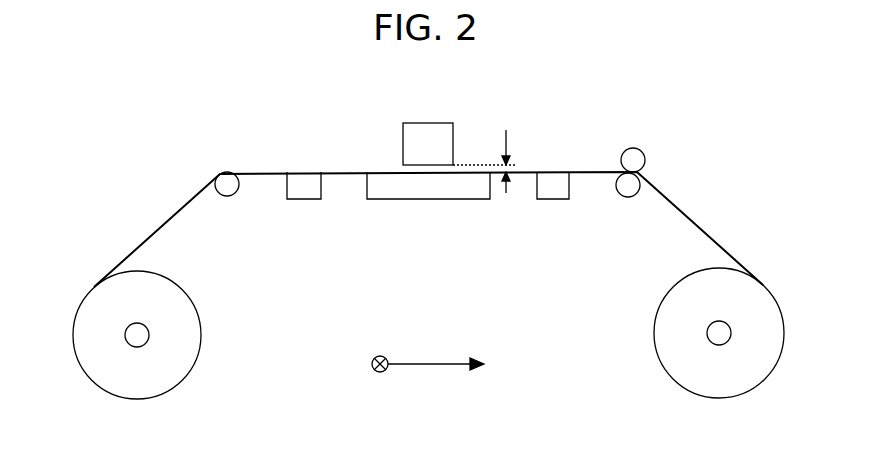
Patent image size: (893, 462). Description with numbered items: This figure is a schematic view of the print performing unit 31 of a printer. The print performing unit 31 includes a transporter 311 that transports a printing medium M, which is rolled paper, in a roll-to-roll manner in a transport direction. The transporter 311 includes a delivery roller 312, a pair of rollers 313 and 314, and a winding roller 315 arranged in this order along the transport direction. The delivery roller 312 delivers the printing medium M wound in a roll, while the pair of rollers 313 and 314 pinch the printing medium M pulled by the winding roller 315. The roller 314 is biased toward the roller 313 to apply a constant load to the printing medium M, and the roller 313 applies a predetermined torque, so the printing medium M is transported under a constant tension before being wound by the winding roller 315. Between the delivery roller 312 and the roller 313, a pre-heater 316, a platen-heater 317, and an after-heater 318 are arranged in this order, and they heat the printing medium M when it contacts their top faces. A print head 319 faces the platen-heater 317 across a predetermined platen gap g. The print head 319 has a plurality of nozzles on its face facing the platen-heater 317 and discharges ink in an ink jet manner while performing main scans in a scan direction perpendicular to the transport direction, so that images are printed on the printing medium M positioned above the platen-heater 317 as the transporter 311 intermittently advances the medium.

The print performing unit 31 is at (164, 75).
The transporter 311 is at (297, 350).
The delivery roller 312 is at (128, 333).
The roller 313 is at (628, 197).
The roller 314 is at (636, 158).
The winding roller 315 is at (714, 335).
The pre-heater 316 is at (305, 190).
The platen-heater 317 is at (433, 190).
The after-heater 318 is at (550, 190).
The print head 319 is at (432, 132).
The printing medium M is at (163, 228).
The platen gap g is at (491, 161).